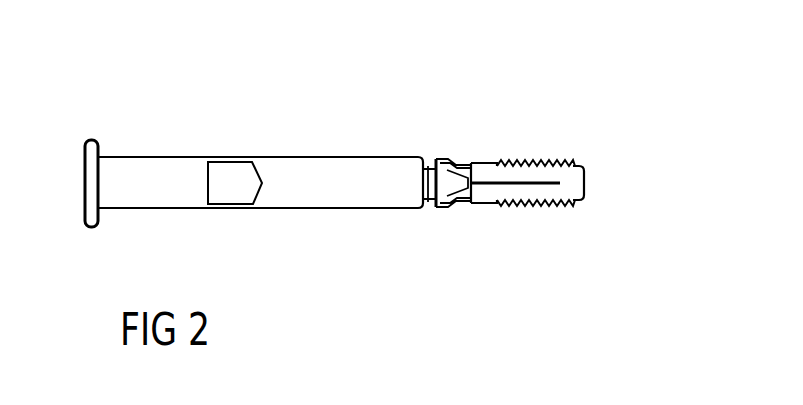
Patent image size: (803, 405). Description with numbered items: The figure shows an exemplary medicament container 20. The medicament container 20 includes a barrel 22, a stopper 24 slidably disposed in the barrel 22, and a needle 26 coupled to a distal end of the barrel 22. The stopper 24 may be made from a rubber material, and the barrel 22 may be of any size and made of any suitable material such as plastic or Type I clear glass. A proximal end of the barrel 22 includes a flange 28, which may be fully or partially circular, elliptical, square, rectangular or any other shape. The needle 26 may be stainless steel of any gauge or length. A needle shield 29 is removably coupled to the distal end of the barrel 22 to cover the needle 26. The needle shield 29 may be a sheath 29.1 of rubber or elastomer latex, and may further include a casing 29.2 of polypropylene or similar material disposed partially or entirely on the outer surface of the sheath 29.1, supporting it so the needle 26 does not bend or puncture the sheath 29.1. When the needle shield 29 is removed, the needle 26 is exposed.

The medicament container 20 is at (405, 90).
The barrel 22 is at (347, 168).
The stopper 24 is at (228, 172).
The needle 26 is at (493, 182).
The flange 28 is at (90, 142).
The needle shield 29 is at (542, 195).
The sheath 29.1 is at (585, 168).
The casing 29.2 is at (537, 162).